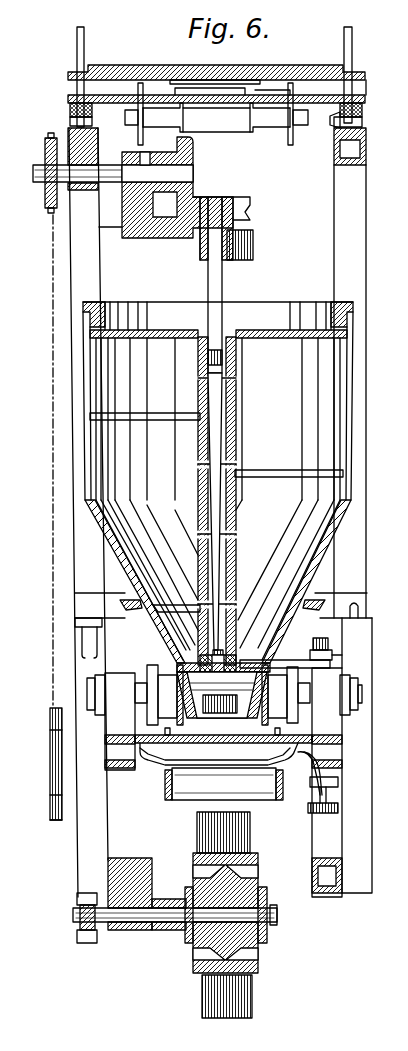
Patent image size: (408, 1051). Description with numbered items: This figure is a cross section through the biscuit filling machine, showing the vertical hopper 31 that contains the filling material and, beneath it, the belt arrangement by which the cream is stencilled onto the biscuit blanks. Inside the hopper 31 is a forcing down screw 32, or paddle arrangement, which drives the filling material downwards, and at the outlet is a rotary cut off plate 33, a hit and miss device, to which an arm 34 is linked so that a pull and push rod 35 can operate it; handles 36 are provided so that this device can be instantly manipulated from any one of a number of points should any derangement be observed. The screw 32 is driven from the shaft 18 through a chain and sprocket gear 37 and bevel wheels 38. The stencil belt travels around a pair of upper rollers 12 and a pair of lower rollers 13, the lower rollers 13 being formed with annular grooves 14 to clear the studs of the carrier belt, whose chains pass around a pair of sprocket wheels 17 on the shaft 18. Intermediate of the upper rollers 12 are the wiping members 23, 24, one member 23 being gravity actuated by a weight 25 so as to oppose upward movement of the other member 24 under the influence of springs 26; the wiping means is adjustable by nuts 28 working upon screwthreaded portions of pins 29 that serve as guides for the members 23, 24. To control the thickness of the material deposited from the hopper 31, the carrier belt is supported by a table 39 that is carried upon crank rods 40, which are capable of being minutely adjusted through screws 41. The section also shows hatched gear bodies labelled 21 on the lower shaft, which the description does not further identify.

The upper rollers 12 is at (232, 127).
The lower rollers 13 is at (157, 694).
The annular grooves 14 is at (165, 673).
The sprocket wheels 17 is at (232, 768).
The shaft 18 is at (50, 762).
The gear 21 is at (226, 915).
The wiper member 23 is at (365, 72).
The wiper member 24 is at (328, 95).
The weight 25 is at (245, 65).
The springs 26 is at (70, 107).
The nuts 28 is at (70, 121).
The pins 29 is at (84, 47).
The hopper 31 is at (90, 471).
The forcing down screw 32 is at (122, 413).
The rotary cut off plate 33 is at (183, 672).
The arm 34 is at (291, 660).
The pull and push rod 35 is at (332, 656).
The handles 36 is at (324, 633).
The chain and sprocket gear 37 is at (47, 206).
The bevel wheels 38 is at (204, 197).
The table 39 is at (300, 735).
The crank rods 40 is at (211, 745).
The screws 41 is at (338, 782).